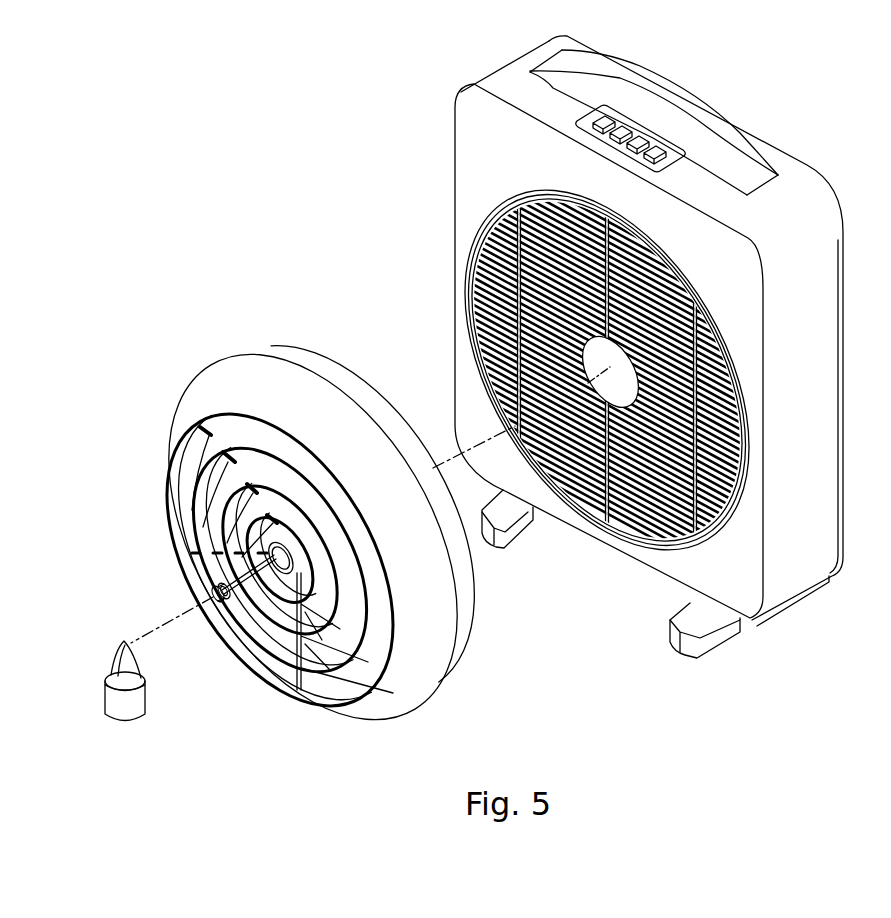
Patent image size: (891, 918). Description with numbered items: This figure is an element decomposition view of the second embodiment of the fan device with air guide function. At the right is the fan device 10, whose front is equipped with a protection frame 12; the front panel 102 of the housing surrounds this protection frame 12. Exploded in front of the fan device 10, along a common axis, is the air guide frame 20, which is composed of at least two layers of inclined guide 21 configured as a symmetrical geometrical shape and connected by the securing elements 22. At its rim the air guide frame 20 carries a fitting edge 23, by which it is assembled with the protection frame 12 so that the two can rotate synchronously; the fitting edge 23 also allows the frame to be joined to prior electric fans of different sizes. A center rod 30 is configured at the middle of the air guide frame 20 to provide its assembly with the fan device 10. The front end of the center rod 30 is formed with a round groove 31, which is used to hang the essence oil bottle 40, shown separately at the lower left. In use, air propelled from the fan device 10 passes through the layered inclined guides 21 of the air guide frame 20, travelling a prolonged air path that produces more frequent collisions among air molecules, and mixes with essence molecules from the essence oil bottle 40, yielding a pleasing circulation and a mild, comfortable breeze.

The fan device 10 is at (750, 110).
The housing front panel 102 is at (480, 138).
The protection frame 12 is at (468, 266).
The air guide frame 20 is at (263, 524).
The inclined guide 21 is at (210, 402).
The securing elements 22 is at (237, 453).
The fitting edge 23 is at (298, 356).
The center rod 30 is at (276, 559).
The round groove 31 is at (218, 589).
The essence oil bottle 40 is at (117, 708).